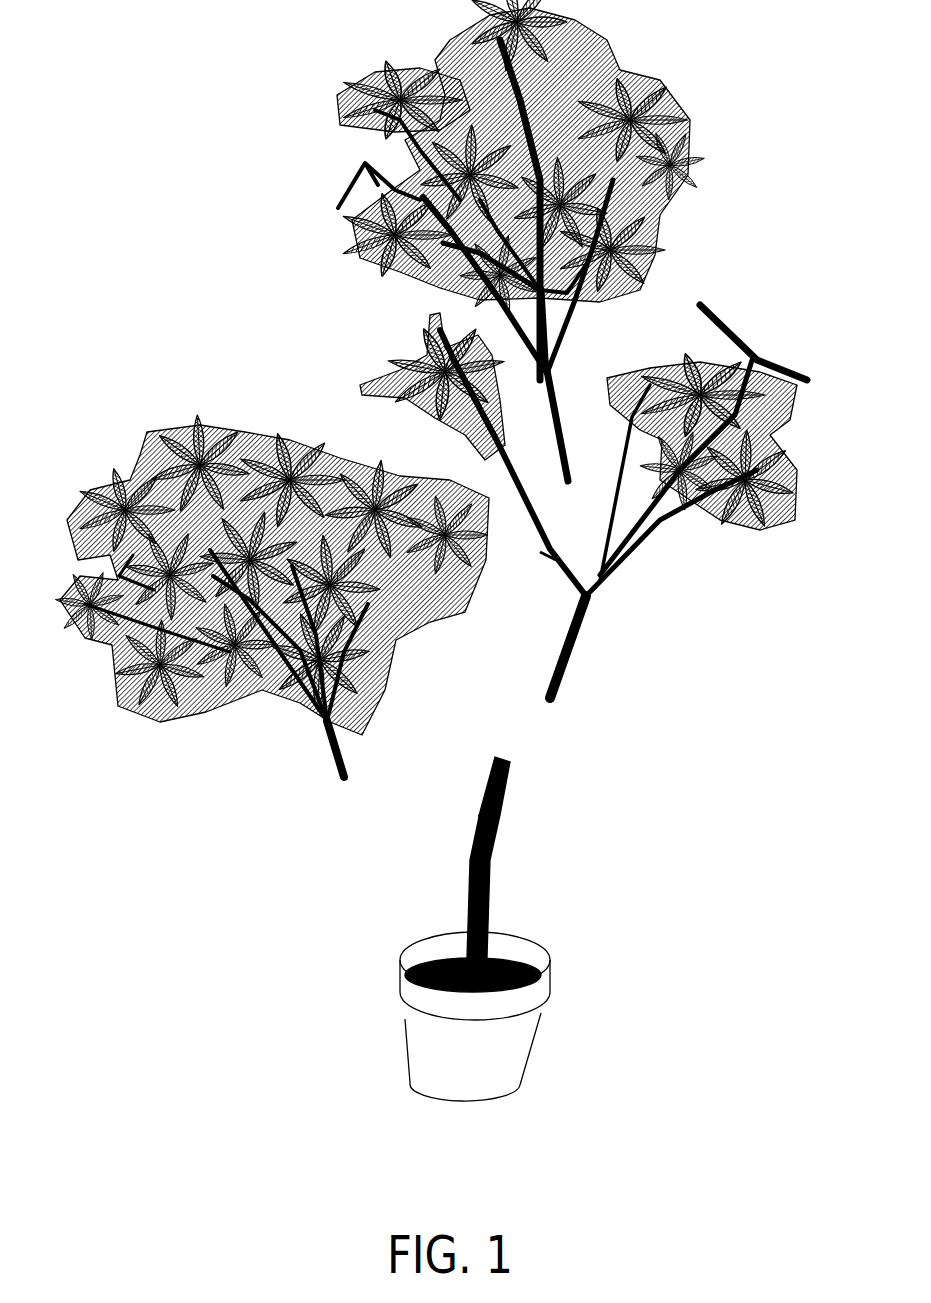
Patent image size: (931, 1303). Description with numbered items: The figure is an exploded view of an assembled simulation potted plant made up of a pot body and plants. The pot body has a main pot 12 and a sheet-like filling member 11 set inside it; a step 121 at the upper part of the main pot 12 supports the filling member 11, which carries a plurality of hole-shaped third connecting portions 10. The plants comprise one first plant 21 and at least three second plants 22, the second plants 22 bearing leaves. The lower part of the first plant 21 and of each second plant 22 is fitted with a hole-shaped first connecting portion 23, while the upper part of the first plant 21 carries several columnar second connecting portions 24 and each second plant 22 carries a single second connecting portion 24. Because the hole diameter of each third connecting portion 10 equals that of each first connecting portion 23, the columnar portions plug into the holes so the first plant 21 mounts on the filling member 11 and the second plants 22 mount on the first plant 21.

The third connecting portion 10 is at (481, 1010).
The filling member 11 is at (520, 970).
The main pot 12 is at (417, 1052).
The step 121 is at (540, 1007).
The first plant 21 is at (487, 857).
The second plant 22 is at (554, 342).
The first connecting portion 23 is at (568, 481).
The second connecting portion 24 is at (480, 816).